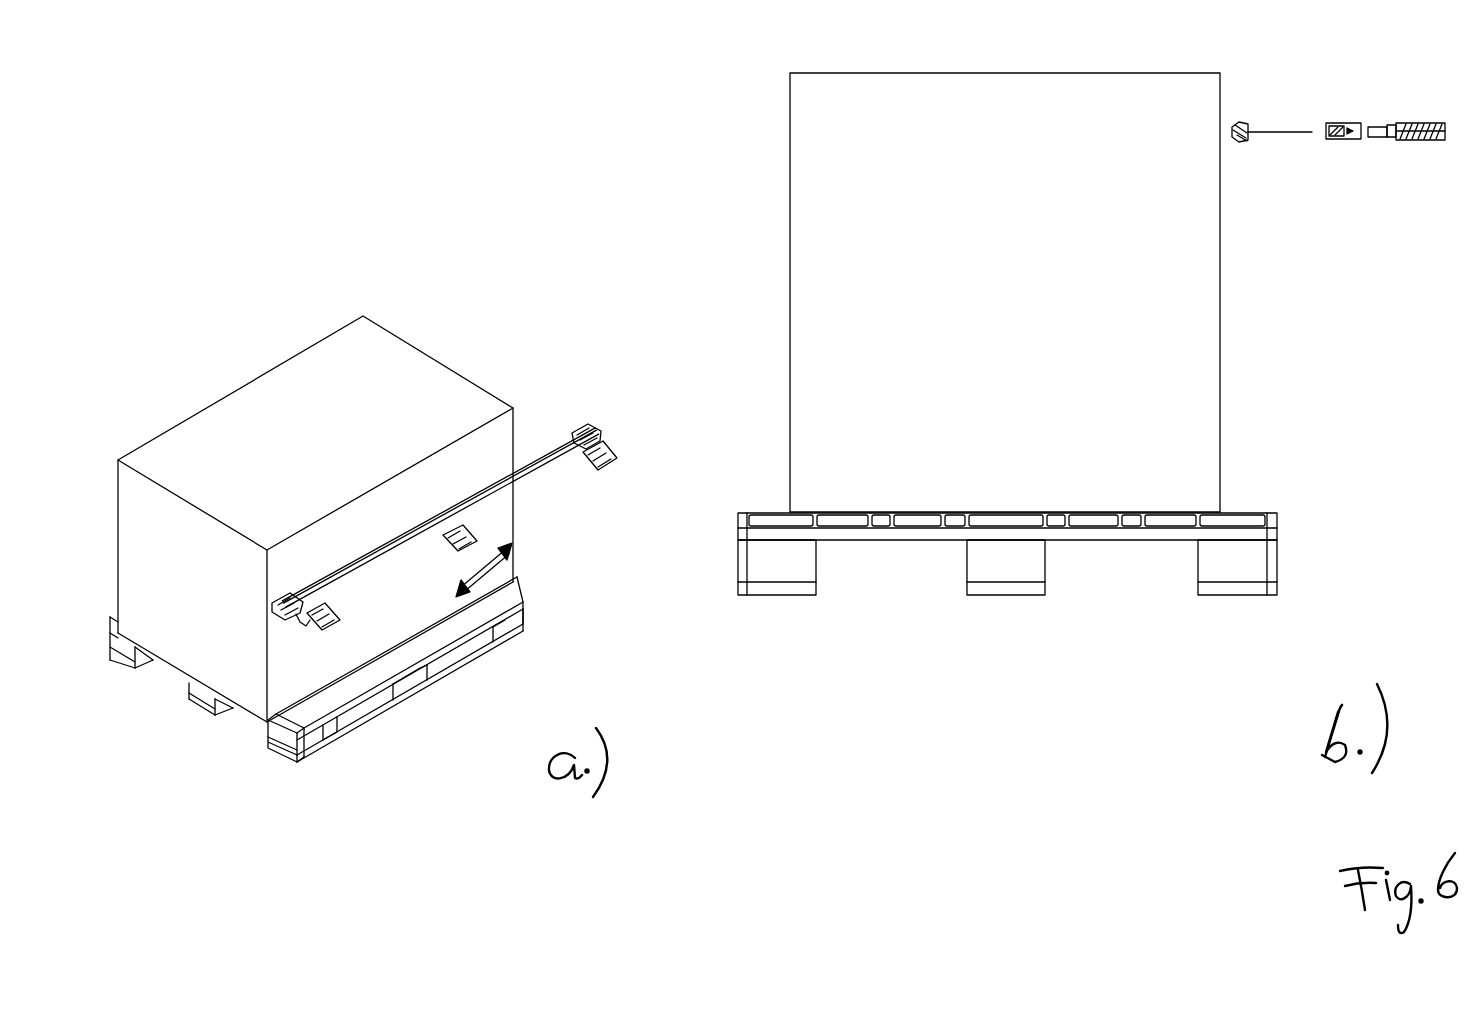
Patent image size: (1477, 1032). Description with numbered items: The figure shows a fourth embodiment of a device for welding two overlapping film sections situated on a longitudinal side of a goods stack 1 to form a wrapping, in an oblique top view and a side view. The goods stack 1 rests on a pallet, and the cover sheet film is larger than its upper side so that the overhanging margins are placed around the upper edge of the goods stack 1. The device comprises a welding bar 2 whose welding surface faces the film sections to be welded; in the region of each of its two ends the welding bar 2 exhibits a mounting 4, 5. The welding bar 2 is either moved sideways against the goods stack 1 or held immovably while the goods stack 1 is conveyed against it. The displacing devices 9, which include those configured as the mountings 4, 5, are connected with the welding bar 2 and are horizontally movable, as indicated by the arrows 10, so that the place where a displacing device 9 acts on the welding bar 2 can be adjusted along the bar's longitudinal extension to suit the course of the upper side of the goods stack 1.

The goods stack 1 is at (1035, 341).
The welding bar 2 is at (553, 440).
The mounting 4 is at (607, 447).
The mounting 5 is at (310, 628).
The displacing device 9 is at (1435, 62).
The arrows 10 is at (490, 573).